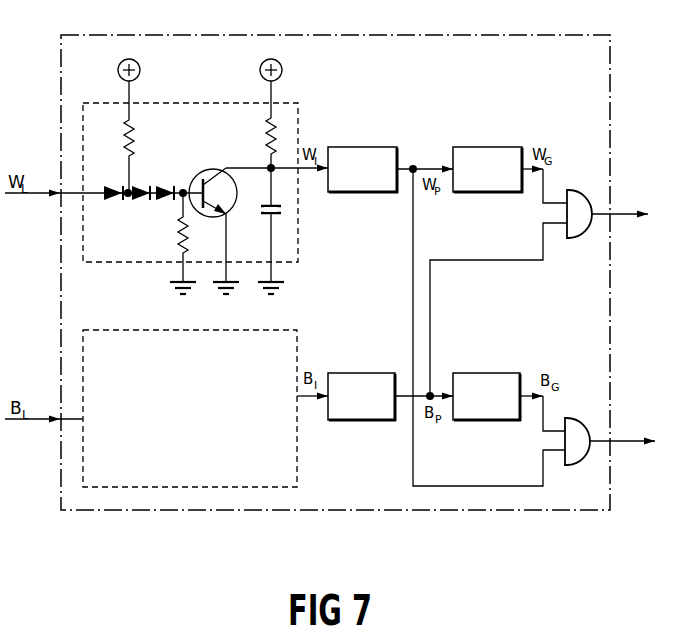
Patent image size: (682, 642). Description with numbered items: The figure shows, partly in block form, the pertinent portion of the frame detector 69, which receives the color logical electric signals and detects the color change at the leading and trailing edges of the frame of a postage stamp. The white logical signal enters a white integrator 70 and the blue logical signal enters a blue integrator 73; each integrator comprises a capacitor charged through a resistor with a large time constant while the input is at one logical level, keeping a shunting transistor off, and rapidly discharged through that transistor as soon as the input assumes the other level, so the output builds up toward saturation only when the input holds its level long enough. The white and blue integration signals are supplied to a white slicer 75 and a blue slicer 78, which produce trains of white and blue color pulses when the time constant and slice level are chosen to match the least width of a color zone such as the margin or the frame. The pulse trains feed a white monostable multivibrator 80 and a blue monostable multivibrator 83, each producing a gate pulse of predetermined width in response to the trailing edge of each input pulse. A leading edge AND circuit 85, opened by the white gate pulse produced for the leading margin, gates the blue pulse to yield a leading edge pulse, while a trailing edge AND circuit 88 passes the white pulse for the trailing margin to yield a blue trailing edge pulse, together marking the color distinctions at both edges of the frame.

The frame detector 69 is at (558, 35).
The white integrator 70 is at (299, 122).
The blue integrator 73 is at (299, 344).
The white slicer 75 is at (372, 147).
The blue slicer 78 is at (368, 373).
The white monostable multivibrator 80 is at (490, 147).
The blue monostable multivibrator 83 is at (487, 373).
The leading edge AND circuit 85 is at (571, 191).
The trailing edge AND circuit 88 is at (591, 420).